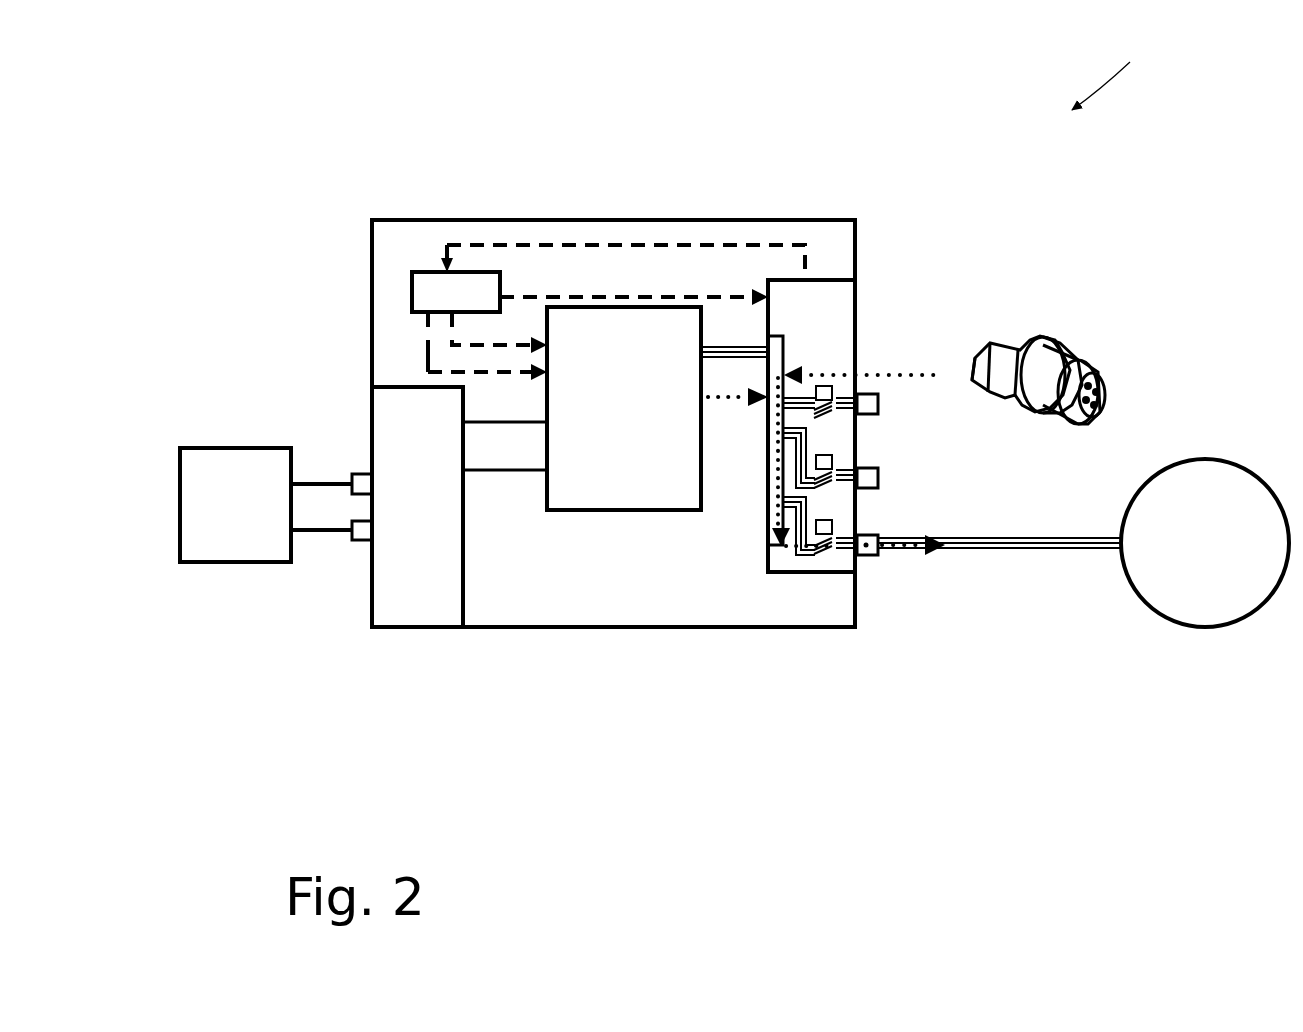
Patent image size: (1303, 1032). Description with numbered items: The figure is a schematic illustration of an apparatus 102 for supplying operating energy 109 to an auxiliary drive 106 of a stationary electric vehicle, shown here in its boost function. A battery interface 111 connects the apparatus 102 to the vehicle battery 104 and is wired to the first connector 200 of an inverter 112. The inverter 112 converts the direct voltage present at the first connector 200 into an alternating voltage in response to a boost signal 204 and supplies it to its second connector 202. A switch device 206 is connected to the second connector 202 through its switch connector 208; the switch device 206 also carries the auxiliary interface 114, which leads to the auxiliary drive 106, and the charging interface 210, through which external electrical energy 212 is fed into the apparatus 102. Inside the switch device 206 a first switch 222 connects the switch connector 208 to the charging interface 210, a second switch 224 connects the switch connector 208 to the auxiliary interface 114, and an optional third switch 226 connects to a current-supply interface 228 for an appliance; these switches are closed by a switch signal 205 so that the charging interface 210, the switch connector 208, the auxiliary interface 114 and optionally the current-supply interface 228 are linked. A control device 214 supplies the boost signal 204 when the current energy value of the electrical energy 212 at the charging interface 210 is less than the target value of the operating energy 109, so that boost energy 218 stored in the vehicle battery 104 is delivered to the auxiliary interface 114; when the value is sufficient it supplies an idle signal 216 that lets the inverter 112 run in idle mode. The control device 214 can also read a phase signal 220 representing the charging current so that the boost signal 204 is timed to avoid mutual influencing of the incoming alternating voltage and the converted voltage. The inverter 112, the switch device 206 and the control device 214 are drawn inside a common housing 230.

The apparatus 102 is at (1136, 70).
The vehicle battery 104 is at (225, 564).
The auxiliary drive 106 is at (1217, 628).
The operating energy 109 is at (850, 558).
The battery interface 111 is at (357, 548).
The inverter 112 is at (628, 512).
The auxiliary interface 114 is at (872, 576).
The first connector 200 is at (535, 505).
The second connector 202 is at (718, 368).
The boost signal 204 is at (486, 345).
The switch signal 205 is at (588, 297).
The switch device 206 is at (845, 280).
The switch connector 208 is at (752, 330).
The charging interface 210 is at (880, 390).
The electrical energy 212 is at (935, 375).
The control device 214 is at (412, 273).
The idle signal 216 is at (428, 350).
The boost energy 218 is at (740, 403).
The phase signal 220 is at (648, 245).
The first switch 222 is at (814, 384).
The second switch 224 is at (827, 558).
The third switch 226 is at (833, 485).
The current-supply interface 228 is at (890, 475).
The common housing 230 is at (477, 628).